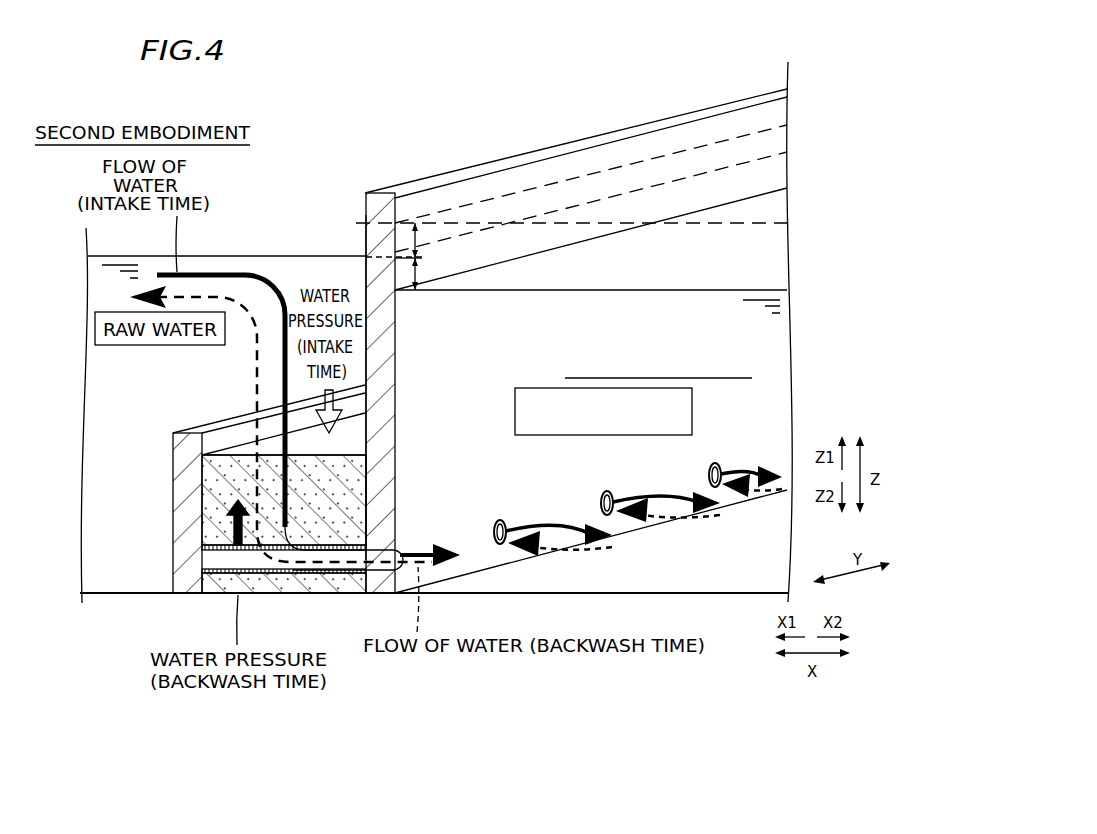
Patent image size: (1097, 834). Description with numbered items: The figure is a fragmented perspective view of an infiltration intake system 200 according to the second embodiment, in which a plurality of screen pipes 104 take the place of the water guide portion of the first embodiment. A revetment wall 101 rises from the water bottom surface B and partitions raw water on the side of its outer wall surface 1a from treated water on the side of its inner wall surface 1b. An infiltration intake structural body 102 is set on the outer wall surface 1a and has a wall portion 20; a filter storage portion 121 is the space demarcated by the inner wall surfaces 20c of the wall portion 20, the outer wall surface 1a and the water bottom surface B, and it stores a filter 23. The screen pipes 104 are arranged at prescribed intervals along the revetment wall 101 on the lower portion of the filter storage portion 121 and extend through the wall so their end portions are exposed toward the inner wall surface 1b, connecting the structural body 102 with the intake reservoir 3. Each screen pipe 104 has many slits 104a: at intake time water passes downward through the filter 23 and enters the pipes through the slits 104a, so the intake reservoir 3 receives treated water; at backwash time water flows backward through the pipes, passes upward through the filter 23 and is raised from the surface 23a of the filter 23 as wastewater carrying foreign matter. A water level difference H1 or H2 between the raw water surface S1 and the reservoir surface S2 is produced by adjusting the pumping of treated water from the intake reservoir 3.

The infiltration intake system 200 is at (325, 154).
The revetment wall 101 is at (372, 192).
The infiltration intake structural body 102 is at (148, 440).
The outer wall surface 1a is at (364, 214).
The inner wall surface 1b is at (443, 197).
The intake reservoir 3 is at (784, 362).
The wall portion 20 is at (182, 595).
The inner wall surfaces 20c is at (218, 438).
The filter storage portion 121 is at (353, 426).
The filter 23 is at (218, 542).
The surface of the filter 23a is at (340, 454).
The screen pipes 104 is at (500, 518).
The slits 104a is at (346, 575).
The water bottom surface B is at (137, 584).
The surface of the raw water S1 is at (232, 256).
The water surface of the intake reservoir S2 is at (742, 222).
The water level difference H1 is at (419, 270).
The water level difference H2 is at (419, 241).